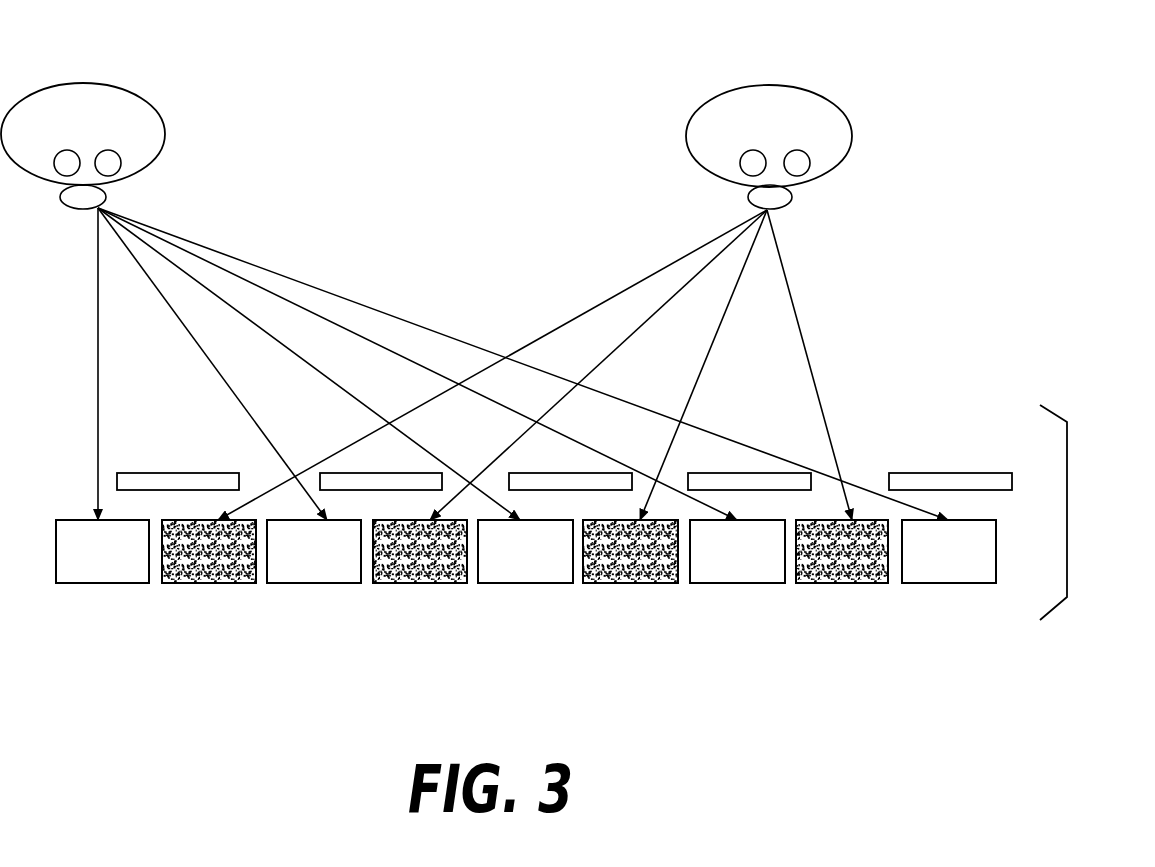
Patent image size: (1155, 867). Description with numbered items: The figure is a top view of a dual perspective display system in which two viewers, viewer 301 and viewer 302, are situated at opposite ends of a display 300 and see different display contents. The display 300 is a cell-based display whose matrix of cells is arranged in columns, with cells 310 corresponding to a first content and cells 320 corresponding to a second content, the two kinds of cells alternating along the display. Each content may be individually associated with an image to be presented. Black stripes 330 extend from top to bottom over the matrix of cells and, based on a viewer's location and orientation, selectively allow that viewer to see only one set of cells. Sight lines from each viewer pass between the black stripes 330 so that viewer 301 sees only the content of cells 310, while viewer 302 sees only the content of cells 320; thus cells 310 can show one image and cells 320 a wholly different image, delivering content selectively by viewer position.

The display 300 is at (1067, 506).
The viewer 301 is at (88, 83).
The viewer 302 is at (792, 83).
The cells 310 is at (118, 565).
The cells 320 is at (224, 565).
The black stripes 330 is at (150, 473).